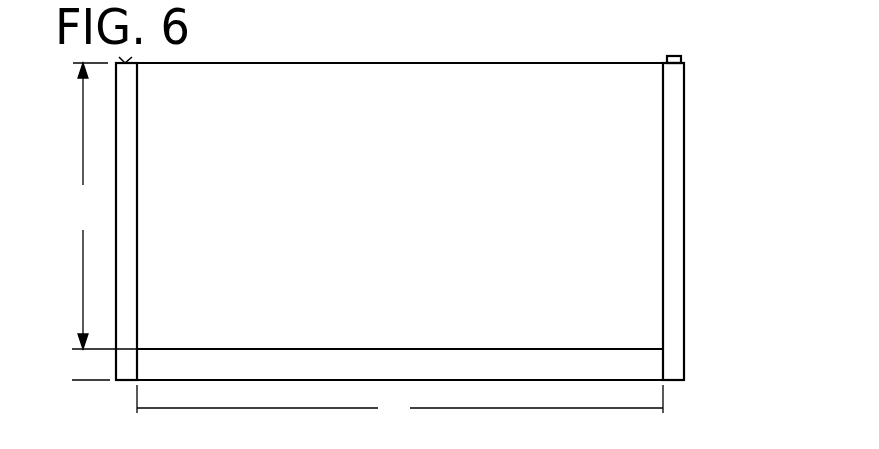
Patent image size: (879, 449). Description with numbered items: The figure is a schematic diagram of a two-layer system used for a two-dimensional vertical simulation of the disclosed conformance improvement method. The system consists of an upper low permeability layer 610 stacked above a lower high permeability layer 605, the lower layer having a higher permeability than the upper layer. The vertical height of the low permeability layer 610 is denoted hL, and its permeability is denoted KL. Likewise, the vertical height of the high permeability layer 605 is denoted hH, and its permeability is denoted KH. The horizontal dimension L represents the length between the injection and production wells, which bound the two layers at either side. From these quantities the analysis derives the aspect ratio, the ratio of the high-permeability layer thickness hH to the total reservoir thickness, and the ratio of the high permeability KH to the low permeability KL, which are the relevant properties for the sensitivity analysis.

The low permeability layer 610 is at (648, 218).
The high permeability layer 605 is at (645, 363).
The permeability of the low permeability layer KL is at (408, 215).
The permeability of the high permeability layer KH is at (402, 364).
The vertical height of the low permeability layer hL is at (103, 206).
The vertical height of the high permeability layer hH is at (83, 363).
The length between the injection and production wells L is at (400, 403).